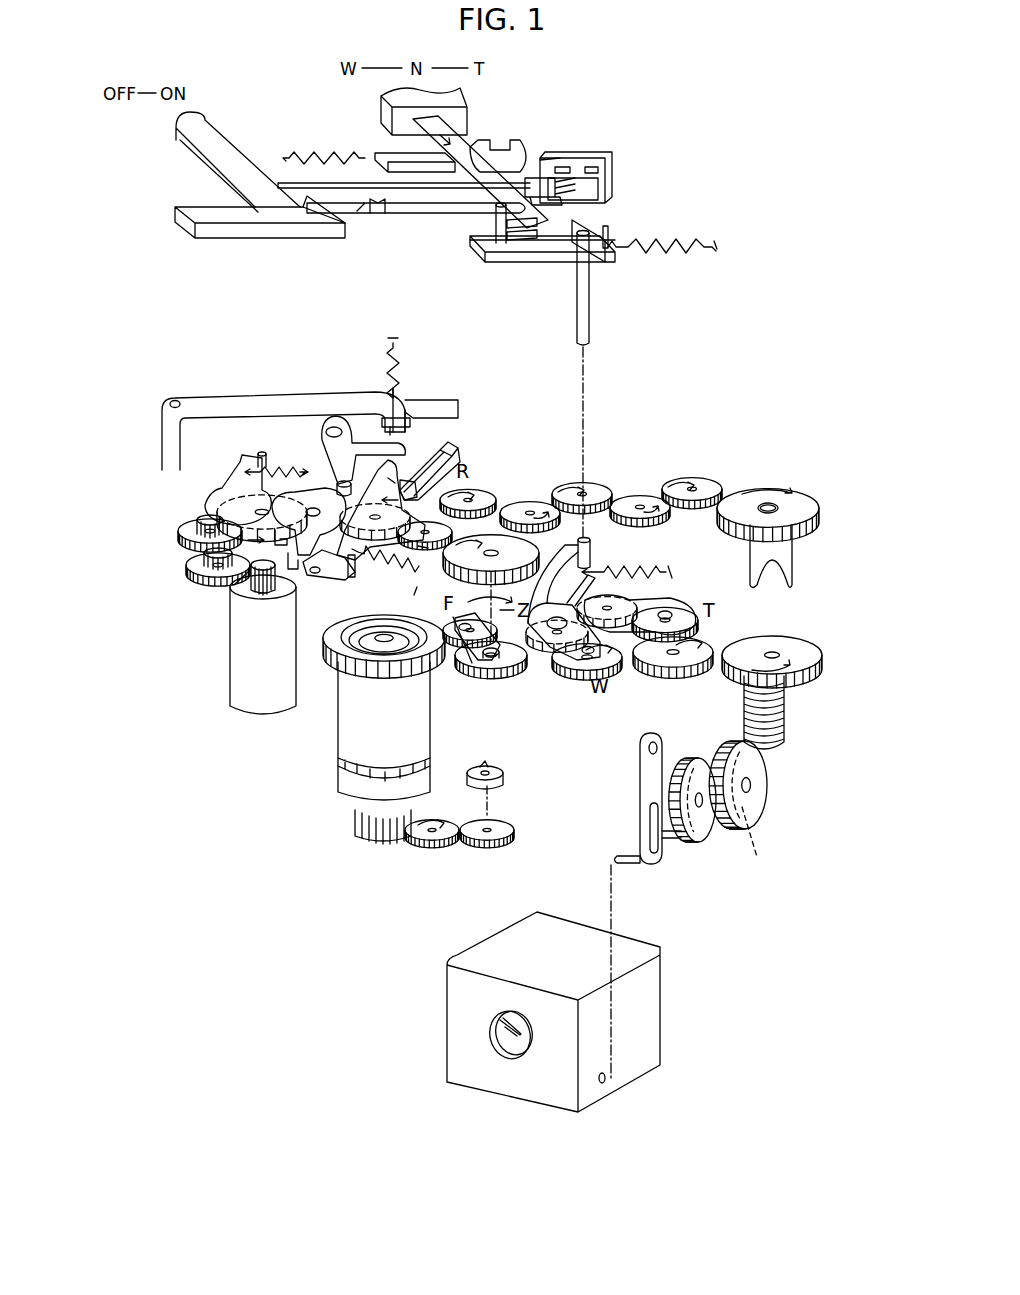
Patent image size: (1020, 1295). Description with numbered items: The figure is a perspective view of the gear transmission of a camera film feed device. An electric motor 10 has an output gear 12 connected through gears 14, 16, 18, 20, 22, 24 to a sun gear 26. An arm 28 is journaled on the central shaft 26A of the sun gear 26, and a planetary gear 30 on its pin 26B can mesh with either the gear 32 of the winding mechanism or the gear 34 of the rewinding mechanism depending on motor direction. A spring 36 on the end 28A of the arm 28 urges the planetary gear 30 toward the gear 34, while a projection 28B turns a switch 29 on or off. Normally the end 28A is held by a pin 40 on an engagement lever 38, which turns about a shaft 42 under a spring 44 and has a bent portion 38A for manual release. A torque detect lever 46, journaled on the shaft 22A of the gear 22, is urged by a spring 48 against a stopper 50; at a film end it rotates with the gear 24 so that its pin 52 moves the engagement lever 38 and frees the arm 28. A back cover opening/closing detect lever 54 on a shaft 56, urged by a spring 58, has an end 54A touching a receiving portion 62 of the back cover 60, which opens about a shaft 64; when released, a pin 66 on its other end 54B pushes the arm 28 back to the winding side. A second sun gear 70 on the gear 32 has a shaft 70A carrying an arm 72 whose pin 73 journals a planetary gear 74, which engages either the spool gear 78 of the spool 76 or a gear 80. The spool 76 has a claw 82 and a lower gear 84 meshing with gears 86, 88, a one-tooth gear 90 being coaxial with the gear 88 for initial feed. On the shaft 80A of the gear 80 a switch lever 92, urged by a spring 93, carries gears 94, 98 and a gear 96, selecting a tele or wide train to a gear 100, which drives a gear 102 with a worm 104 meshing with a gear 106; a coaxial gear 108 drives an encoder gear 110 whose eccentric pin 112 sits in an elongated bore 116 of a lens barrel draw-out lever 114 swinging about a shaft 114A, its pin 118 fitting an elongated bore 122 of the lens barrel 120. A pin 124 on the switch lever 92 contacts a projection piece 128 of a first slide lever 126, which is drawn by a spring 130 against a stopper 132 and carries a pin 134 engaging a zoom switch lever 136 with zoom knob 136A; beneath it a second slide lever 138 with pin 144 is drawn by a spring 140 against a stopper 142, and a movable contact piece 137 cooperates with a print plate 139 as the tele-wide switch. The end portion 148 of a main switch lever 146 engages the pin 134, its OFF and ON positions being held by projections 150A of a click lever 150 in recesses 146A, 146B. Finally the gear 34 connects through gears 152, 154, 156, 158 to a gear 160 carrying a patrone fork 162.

The electric motor 10 is at (245, 666).
The output gear 12 is at (240, 596).
The gear 14 is at (188, 577).
The gear 16 is at (204, 557).
The gear 18 is at (178, 533).
The gear 20 is at (198, 520).
The gear 22 is at (218, 508).
The shaft of gear 22 22A is at (240, 498).
The gear 24 is at (318, 507).
The sun gear 26 is at (370, 488).
The central shaft 26A is at (388, 552).
The pin 26B is at (425, 530).
The arm 28 is at (410, 490).
The end of arm 28A is at (368, 582).
The projection 28B is at (395, 480).
The switch 29 is at (452, 448).
The planetary gear 30 is at (422, 548).
The gear in film winding mechanism 32 is at (528, 555).
The gear in film rewinding mechanism 34 is at (483, 498).
The spring 36 is at (392, 572).
The engagement lever 38 is at (330, 580).
The bent portion 38A is at (234, 585).
The pin 40 is at (360, 624).
The shaft 42 is at (290, 556).
The spring 44 is at (298, 572).
The torque detect lever 46 is at (272, 518).
The spring 48 is at (278, 468).
The stopper 50 is at (261, 454).
The pin 52 is at (268, 592).
The back cover opening/closing detect lever 54 is at (345, 443).
The end of detect lever 54A is at (430, 400).
The other end of detect lever 54B is at (337, 488).
The shaft 56 is at (332, 425).
The spring 58 is at (408, 338).
The back cover 60 is at (302, 393).
The receiving portion 62 is at (395, 420).
The opening/closing shaft 64 is at (177, 398).
The pin 66 is at (358, 428).
The sun gear 70 is at (497, 680).
The shaft 70A is at (510, 678).
The arm 72 is at (462, 660).
The pin 73 is at (483, 665).
The planetary gear 74 is at (455, 650).
The spool 76 is at (350, 730).
The spool gear 78 is at (330, 660).
The gear in focal distance changing mechanism 80 is at (544, 660).
The shaft of rotation 80A is at (548, 617).
The claw 82 is at (425, 770).
The gear 84 is at (355, 830).
The gear 86 is at (415, 847).
The gear 88 is at (500, 850).
The one-tooth gear 90 is at (504, 776).
The switch lever 92 is at (580, 596).
The spring 93 is at (632, 572).
The gear 94 is at (655, 604).
The gear 96 is at (672, 612).
The gear 98 is at (610, 678).
The gear 100 is at (688, 678).
The gear 102 is at (785, 640).
The worm 104 is at (785, 708).
The gear 106 is at (738, 758).
The gear 108 is at (763, 844).
The encoder gear 110 is at (692, 760).
The pin 112 is at (668, 840).
The lens barrel draw-out lever 114 is at (650, 770).
The shaft 114A is at (653, 742).
The elongated bore 116 is at (650, 806).
The pin 118 is at (617, 856).
The lens barrel 120 is at (585, 1100).
The elongated bore 122 is at (608, 1082).
The pin 124 is at (590, 342).
The first slide lever 126 is at (553, 265).
The projection piece 128 is at (585, 226).
The spring 130 is at (672, 260).
The stopper 132 is at (618, 246).
The pin 134 is at (497, 228).
The zoom switch lever 136 is at (405, 153).
The zoom knob 136A is at (392, 100).
The movable contact piece 137 is at (548, 183).
The second slide lever 138 is at (545, 168).
The print plate 139 is at (606, 165).
The spring 140 is at (312, 156).
The stopper 142 is at (505, 155).
The pin 144 is at (470, 145).
The main switch lever 146 is at (406, 218).
The recessed portion 146A is at (300, 185).
The recessed portion 146B is at (372, 216).
The end portion 148 is at (520, 246).
The click lever 150 is at (275, 235).
The projections 150A is at (313, 217).
The gear 152 is at (530, 505).
The gear 154 is at (592, 488).
The gear 156 is at (645, 498).
The gear 158 is at (705, 482).
The gear 160 is at (795, 500).
The patrone fork 162 is at (792, 565).